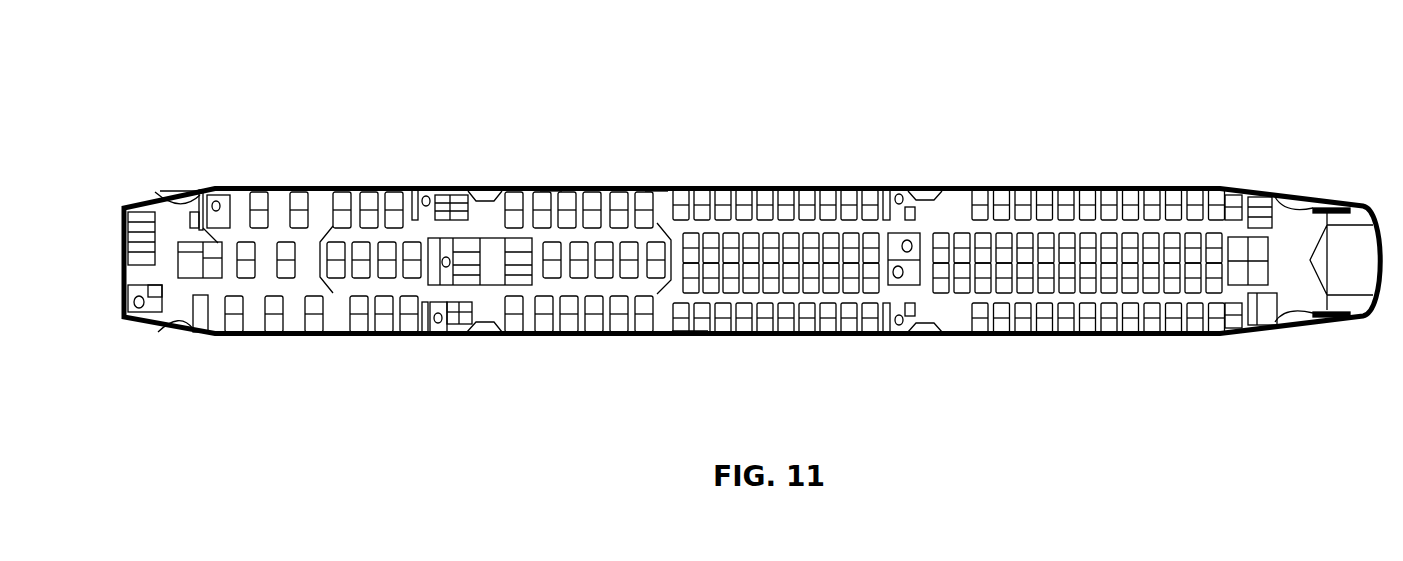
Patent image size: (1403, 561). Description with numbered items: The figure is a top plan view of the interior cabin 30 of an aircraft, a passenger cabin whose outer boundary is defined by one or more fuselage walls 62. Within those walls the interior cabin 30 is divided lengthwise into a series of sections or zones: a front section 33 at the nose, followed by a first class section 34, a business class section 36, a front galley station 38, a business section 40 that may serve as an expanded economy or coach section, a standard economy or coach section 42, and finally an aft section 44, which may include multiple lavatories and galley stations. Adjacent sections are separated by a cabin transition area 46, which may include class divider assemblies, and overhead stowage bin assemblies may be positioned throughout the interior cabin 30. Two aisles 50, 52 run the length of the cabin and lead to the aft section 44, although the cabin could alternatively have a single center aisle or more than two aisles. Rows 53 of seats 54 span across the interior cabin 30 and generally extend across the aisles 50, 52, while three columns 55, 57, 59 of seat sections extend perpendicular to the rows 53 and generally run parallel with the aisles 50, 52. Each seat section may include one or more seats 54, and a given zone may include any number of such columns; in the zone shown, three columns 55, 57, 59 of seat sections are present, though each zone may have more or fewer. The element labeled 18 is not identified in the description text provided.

The interior cabin 30 is at (266, 90).
The cabin 18 is at (610, 149).
The front section 33 is at (187, 349).
The first class section 34 is at (283, 338).
The business class section 36 is at (357, 186).
The front galley station 38 is at (486, 338).
The business section 40 is at (585, 338).
The standard economy or coach section 42 is at (758, 256).
The aft section 44 is at (1298, 188).
The cabin transition area 46 is at (200, 186).
The aisle 50 is at (1087, 228).
The aisle 52 is at (1107, 295).
The rows 53 is at (689, 342).
The seats 54 is at (676, 325).
The column 55 is at (673, 313).
The column 57 is at (676, 197).
The column 59 is at (687, 236).
The fuselage walls 62 is at (552, 185).